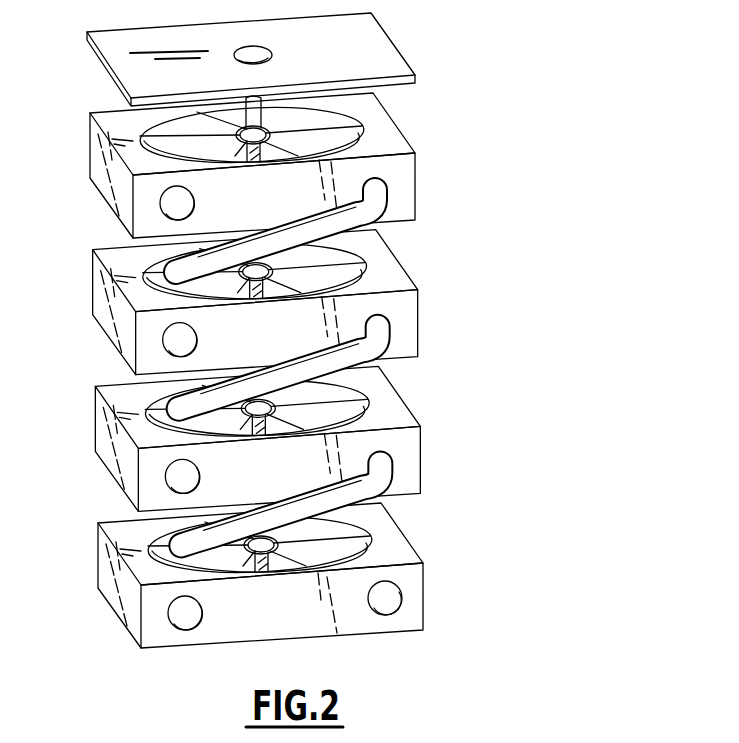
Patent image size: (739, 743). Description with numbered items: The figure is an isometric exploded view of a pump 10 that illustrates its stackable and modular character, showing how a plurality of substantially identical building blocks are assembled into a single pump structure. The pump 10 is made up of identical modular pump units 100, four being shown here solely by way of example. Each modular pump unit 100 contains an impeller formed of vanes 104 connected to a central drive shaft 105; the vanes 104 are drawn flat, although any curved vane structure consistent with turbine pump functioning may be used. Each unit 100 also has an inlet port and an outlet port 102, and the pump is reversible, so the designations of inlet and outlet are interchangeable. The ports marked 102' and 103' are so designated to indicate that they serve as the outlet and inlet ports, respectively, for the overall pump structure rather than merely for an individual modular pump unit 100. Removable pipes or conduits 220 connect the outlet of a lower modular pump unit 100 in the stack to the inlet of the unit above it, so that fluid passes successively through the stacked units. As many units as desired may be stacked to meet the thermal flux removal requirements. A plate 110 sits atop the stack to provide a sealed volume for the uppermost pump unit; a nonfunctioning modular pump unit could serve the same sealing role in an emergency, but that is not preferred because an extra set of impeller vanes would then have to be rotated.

The pump 10 is at (494, 260).
The modular pump unit 100 is at (419, 191).
The outlet port 102 is at (107, 481).
The outlet port 102' is at (103, 209).
The inlet port 103' is at (419, 627).
The vanes 104 is at (347, 134).
The central drive shaft 105 is at (263, 98).
The plate 110 is at (365, 63).
The removable pipes or conduits 220 is at (296, 221).